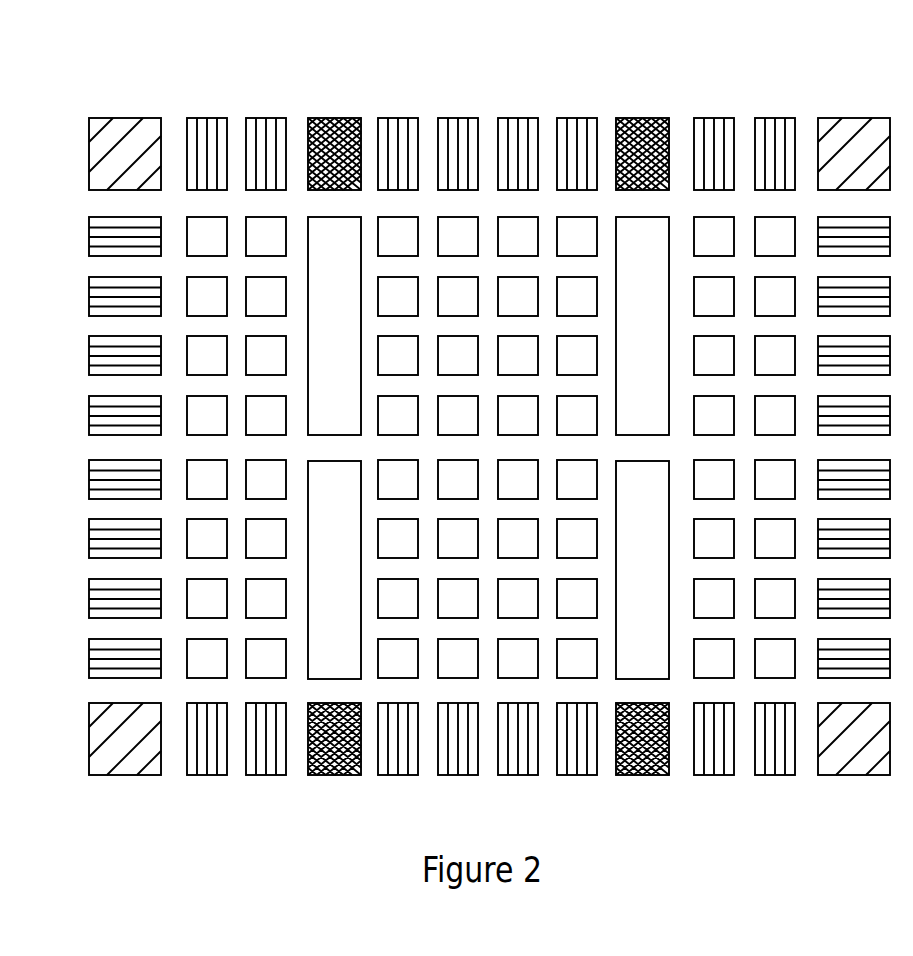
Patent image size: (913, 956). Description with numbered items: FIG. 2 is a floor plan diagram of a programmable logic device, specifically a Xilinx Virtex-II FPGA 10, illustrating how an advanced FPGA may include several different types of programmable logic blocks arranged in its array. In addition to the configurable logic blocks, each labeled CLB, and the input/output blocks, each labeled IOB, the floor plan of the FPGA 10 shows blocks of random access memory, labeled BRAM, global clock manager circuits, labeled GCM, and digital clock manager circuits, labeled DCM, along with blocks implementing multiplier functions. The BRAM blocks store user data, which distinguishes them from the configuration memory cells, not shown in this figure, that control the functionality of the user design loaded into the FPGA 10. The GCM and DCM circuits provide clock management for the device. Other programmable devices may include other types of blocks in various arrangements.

The FPGA (field programmable gate array) 10 is at (489, 397).
The global clock manager circuit GCM is at (127, 118).
The block of random access memory BRAM is at (357, 217).
The element IOB is at (399, 118).
The element CLB is at (532, 217).
The digital clock manager circuit DCM is at (642, 118).